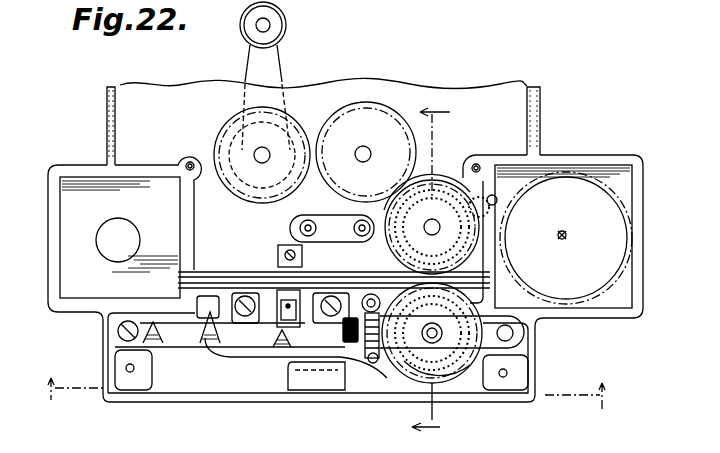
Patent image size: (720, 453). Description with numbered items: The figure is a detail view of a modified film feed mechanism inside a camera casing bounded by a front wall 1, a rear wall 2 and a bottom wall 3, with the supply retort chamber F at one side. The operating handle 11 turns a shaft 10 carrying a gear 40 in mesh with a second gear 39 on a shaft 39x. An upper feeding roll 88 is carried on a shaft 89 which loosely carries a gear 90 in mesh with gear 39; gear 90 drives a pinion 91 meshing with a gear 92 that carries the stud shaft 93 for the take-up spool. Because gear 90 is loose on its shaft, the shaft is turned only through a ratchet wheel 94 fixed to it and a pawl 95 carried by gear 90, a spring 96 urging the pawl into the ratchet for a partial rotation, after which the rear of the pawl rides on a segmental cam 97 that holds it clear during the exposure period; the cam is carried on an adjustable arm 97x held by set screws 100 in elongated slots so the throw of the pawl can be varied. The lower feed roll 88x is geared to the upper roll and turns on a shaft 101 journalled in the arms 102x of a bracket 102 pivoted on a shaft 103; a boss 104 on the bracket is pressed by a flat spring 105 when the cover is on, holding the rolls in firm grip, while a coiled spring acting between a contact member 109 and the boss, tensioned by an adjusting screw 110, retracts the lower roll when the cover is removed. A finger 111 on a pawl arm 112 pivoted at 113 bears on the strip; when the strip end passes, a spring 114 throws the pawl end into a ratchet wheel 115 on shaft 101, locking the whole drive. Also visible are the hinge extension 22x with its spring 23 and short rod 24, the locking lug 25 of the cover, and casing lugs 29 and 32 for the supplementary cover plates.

The supply retort chamber F is at (50, 203).
The front wall 1 is at (105, 113).
The rear wall 2 is at (540, 112).
The bottom wall 3 is at (233, 397).
The shaft 10 is at (258, 152).
The operating handle 11 is at (273, 57).
The right angle extension 22x is at (290, 287).
The spring 23 is at (324, 394).
The short rod 24 is at (277, 303).
The locking lug 25 is at (300, 258).
The casing lug 29 is at (143, 372).
The casing lug 32 is at (197, 177).
The gear 39 is at (378, 107).
The shaft 39x is at (362, 147).
The gear 40 is at (305, 118).
The upper feeding roll 88 is at (442, 180).
The lower feed roll 88x is at (455, 388).
The shaft 89 is at (438, 217).
The gear 90 is at (482, 228).
The pinion 91 is at (497, 198).
The gear 92 is at (588, 177).
The stud shaft 93 is at (565, 233).
The ratchet wheel 94 is at (487, 252).
The pawl 95 is at (393, 197).
The spring 96 is at (498, 268).
The segmental cam 97 is at (418, 184).
The adjustable arm 97x is at (346, 231).
The set screw 100 is at (308, 222).
The shaft 101 is at (425, 362).
The bracket 102 is at (345, 362).
The arm 102x is at (513, 343).
The shaft 103 is at (513, 333).
The boss 104 is at (305, 330).
The flat spring 105 is at (358, 293).
The contact member 109 is at (432, 333).
The adjusting screw 110 is at (380, 368).
The finger 111 is at (200, 287).
The pawl arm 112 is at (178, 338).
The pivot 113 is at (118, 332).
The spring 114 is at (243, 365).
The ratchet wheel 115 is at (488, 297).